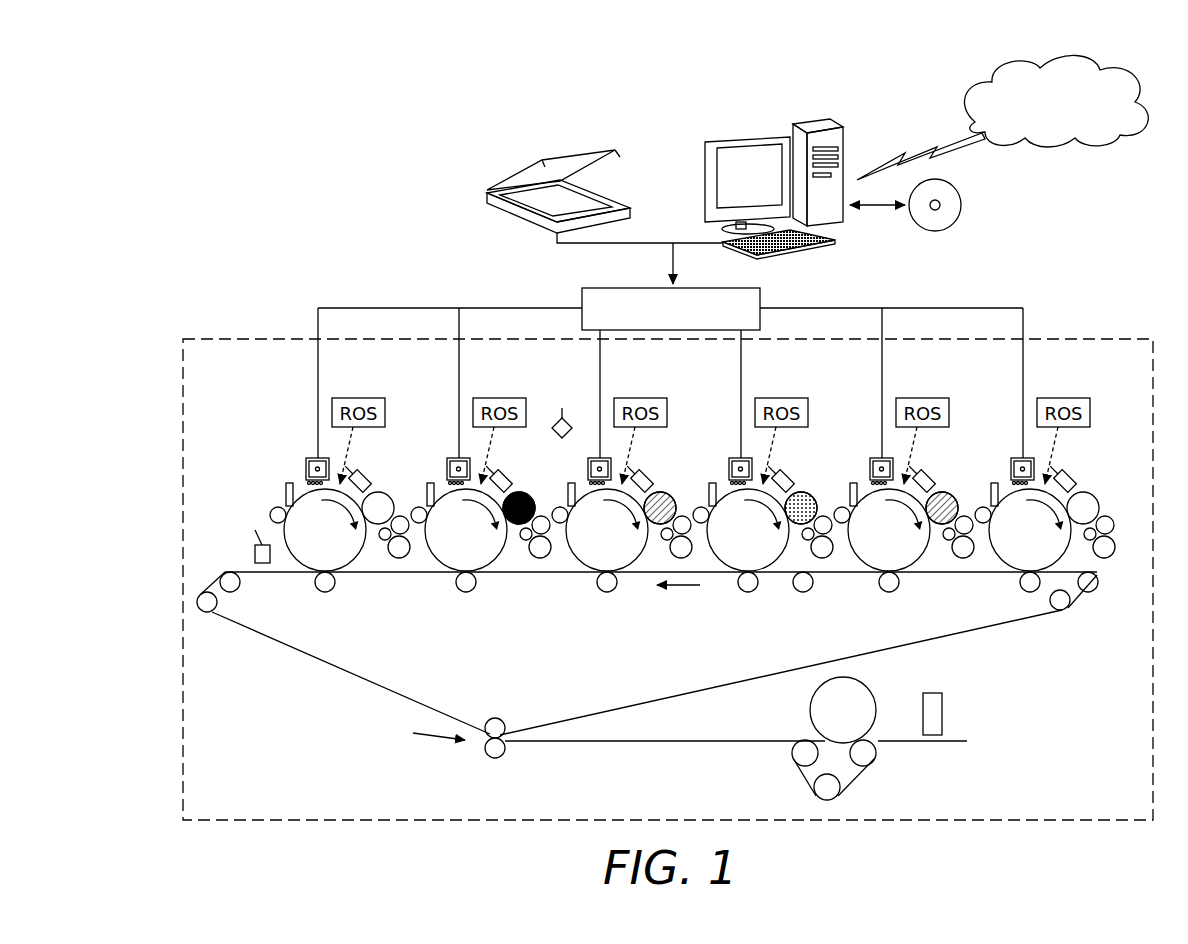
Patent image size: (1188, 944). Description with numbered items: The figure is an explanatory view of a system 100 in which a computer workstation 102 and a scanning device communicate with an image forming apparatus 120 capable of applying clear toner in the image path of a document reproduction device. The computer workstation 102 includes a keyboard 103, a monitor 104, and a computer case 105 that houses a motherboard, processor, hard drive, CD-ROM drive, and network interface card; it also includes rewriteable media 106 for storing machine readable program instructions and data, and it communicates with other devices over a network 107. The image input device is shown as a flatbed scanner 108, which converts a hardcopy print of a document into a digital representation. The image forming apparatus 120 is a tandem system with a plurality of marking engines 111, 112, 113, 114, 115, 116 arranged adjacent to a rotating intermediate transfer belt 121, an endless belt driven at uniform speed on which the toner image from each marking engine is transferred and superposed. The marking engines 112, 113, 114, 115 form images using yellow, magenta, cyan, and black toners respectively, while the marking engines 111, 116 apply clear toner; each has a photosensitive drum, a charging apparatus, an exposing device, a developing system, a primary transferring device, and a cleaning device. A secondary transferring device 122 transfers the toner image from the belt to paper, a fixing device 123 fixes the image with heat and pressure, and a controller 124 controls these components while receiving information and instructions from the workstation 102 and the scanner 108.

The imaging system / scanner platen 100 is at (548, 203).
The computer workstation 102 is at (788, 186).
The keyboard 103 is at (787, 253).
The monitor 104 is at (712, 140).
The computer case 105 is at (790, 120).
The rewriteable media 106 is at (958, 190).
The network 107 is at (1118, 137).
The flatbed scanner 108 is at (487, 203).
The marking engine 111 is at (1002, 443).
The marking engine 112 is at (861, 436).
The marking engine 113 is at (720, 436).
The marking engine 114 is at (589, 436).
The marking engine 115 is at (448, 438).
The marking engine 116 is at (306, 438).
The image forming apparatus 120 is at (1093, 338).
The intermediate transfer belt 121 is at (318, 665).
The secondary transferring device 122 is at (510, 748).
The fixing device 123 is at (878, 750).
The controller 124 is at (605, 288).